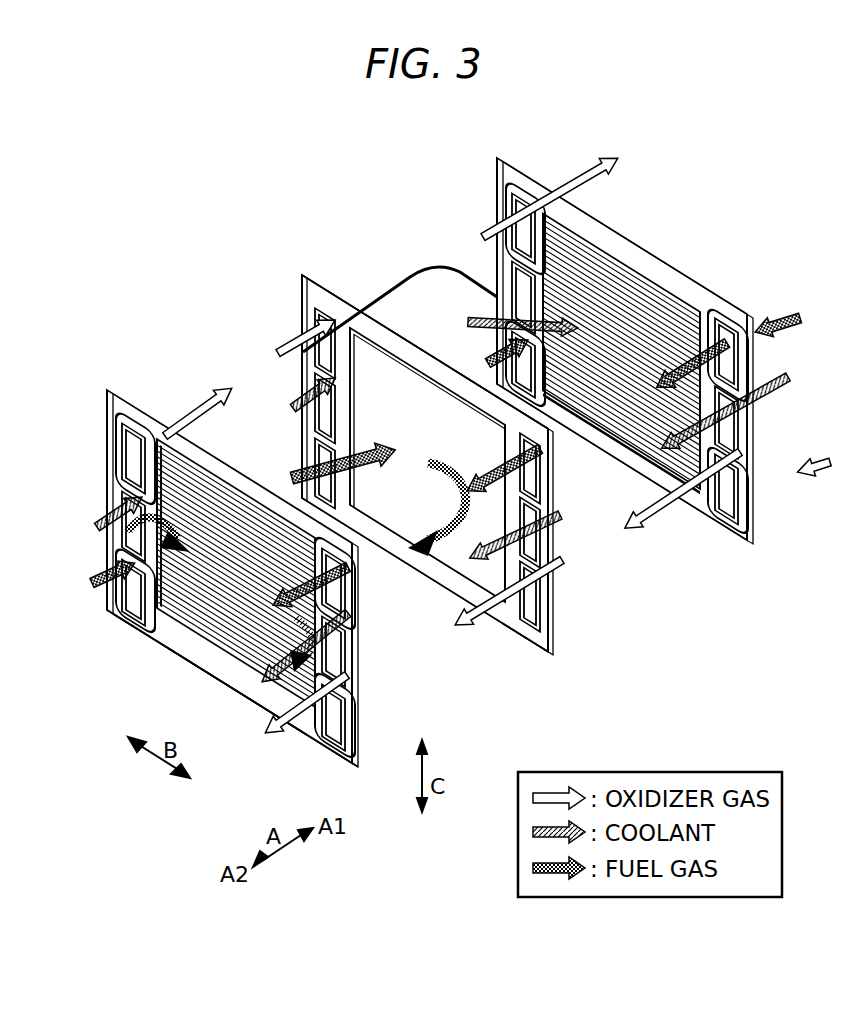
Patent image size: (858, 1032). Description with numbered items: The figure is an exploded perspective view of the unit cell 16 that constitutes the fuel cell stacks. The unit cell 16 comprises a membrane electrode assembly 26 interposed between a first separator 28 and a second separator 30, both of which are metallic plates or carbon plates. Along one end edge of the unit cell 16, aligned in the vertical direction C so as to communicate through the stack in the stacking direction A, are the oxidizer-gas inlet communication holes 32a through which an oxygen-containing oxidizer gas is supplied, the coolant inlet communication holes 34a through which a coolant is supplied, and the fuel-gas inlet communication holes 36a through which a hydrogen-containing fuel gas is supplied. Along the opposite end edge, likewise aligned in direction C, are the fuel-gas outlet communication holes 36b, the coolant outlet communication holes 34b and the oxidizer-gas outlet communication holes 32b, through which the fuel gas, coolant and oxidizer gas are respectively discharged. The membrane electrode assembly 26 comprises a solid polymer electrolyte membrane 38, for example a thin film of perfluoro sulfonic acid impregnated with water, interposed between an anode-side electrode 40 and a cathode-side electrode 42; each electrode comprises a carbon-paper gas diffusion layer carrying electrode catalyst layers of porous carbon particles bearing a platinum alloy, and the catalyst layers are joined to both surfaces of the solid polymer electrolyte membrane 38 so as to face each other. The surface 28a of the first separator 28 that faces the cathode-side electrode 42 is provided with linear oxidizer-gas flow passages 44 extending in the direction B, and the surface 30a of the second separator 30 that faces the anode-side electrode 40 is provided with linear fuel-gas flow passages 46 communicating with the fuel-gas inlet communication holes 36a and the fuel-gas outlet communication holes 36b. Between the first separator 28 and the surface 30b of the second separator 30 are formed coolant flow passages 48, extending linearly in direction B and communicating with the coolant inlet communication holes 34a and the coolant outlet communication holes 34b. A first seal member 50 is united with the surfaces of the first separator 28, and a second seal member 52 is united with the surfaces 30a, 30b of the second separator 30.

The unit cell 16 is at (162, 256).
The membrane electrode assembly 26 is at (325, 285).
The first separator 28 is at (625, 364).
The surface of the first separator 28a is at (729, 520).
The second separator 30 is at (232, 553).
The surface of the second separator 30a is at (312, 736).
The surface of the second separator 30b is at (230, 677).
The oxidizer-gas inlet communication holes 32a is at (122, 437).
The oxidizer-gas outlet communication holes 32b is at (350, 710).
The coolant inlet communication holes 34a is at (122, 510).
The coolant outlet communication holes 34b is at (348, 667).
The fuel-gas inlet communication holes 36a is at (120, 568).
The fuel-gas outlet communication holes 36b is at (343, 587).
The solid polymer electrolyte membrane 38 is at (520, 636).
The anode-side electrode 40 is at (427, 477).
The cathode-side electrode 42 is at (400, 372).
The oxidizer-gas flow passages 44 is at (673, 320).
The fuel-gas flow passages 46 is at (243, 527).
The coolant flow passages 48 is at (199, 503).
The first seal member 50 is at (626, 461).
The second seal member 52 is at (167, 643).